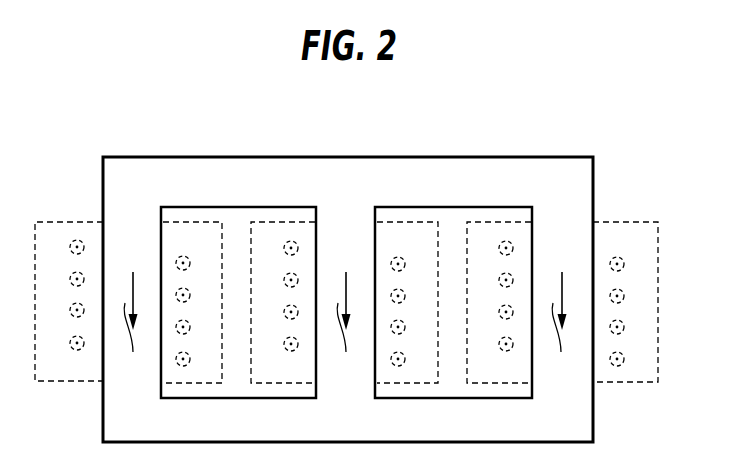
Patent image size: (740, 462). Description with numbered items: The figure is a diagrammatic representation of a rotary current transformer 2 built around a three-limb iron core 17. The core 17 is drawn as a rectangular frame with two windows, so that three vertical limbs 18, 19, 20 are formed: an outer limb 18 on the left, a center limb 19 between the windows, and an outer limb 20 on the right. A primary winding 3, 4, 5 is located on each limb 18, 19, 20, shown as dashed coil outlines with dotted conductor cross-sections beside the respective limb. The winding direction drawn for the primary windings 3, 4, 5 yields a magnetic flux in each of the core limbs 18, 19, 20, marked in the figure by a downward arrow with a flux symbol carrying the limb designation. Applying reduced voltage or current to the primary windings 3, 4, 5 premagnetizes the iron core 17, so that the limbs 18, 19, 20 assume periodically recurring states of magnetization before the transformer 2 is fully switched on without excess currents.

The rotary current transformer 2 is at (286, 126).
The primary winding 3 is at (76, 365).
The primary winding 4 is at (301, 376).
The primary winding 5 is at (634, 371).
The iron core 17 is at (542, 152).
The limb 18 is at (129, 224).
The limb 19 is at (336, 226).
The limb 20 is at (565, 222).